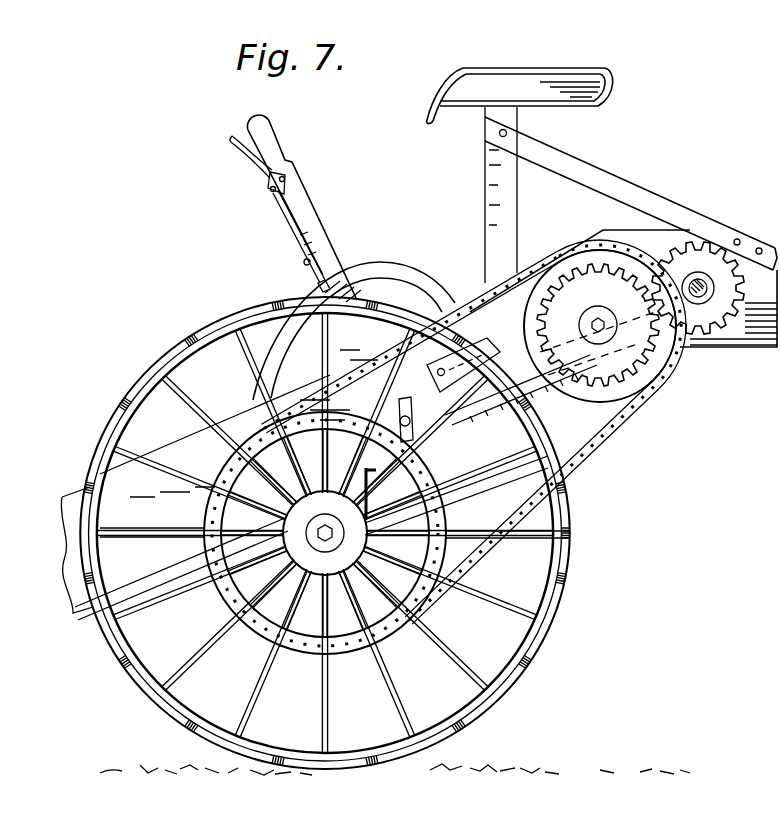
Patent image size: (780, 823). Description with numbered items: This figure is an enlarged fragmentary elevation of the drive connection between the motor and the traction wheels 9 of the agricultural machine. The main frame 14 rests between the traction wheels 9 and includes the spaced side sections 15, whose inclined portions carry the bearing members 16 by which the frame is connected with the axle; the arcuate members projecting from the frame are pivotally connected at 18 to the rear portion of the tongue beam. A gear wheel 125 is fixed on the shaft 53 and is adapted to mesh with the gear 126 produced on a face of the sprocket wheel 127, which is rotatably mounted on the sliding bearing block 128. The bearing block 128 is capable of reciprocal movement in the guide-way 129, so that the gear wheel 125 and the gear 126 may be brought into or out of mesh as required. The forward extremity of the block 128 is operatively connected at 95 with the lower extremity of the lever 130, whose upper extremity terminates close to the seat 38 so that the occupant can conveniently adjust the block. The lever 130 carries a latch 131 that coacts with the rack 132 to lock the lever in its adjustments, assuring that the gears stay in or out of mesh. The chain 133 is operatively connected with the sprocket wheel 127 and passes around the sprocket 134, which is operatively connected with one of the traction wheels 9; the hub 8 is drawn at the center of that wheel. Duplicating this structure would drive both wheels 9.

The seat 38 is at (528, 74).
The sprocket wheel 127 is at (595, 260).
The gear wheel 125 is at (690, 255).
The lever 130 is at (318, 240).
The rack 132 is at (368, 273).
The latch 131 is at (303, 268).
The pivotal connection 18 is at (631, 226).
The side section 15 is at (746, 340).
The shaft 53 is at (700, 305).
The gear 126 is at (627, 372).
The chain 133 is at (583, 448).
The sliding bearing block 128 is at (508, 413).
The guide-way 129 is at (452, 395).
The operative connection 95 is at (377, 502).
The bearing member 16 is at (378, 523).
The wheel hub 8 is at (352, 545).
The traction wheel 9 is at (546, 608).
The sprocket 134 is at (365, 645).
The main frame 14 is at (62, 497).